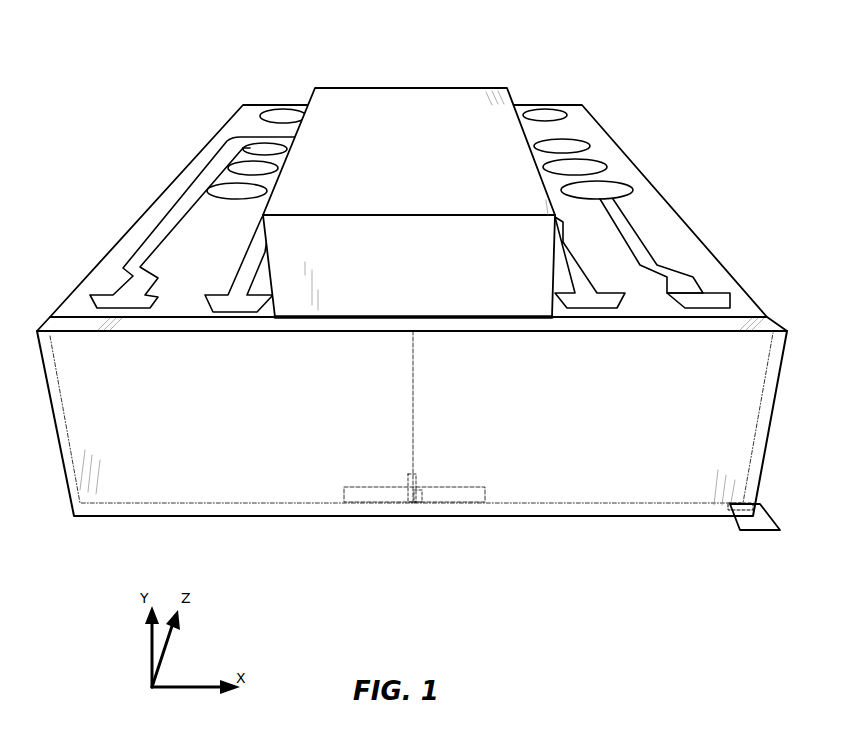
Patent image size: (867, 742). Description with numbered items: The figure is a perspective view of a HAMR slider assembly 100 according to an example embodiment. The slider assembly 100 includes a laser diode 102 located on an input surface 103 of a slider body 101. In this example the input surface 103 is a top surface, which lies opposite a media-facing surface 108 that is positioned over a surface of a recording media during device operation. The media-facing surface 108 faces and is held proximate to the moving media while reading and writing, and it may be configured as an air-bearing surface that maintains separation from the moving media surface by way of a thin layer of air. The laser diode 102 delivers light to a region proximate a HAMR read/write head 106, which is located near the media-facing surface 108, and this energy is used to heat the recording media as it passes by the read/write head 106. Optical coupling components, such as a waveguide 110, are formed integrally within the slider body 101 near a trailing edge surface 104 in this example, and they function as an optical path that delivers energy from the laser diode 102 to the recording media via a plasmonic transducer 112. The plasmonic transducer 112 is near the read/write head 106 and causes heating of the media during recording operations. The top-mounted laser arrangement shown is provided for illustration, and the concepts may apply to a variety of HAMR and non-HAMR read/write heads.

The HAMR slider assembly 100 is at (598, 48).
The slider body 101 is at (218, 132).
The laser diode 102 is at (337, 88).
The input surface 103 is at (100, 278).
The trailing edge surface 104 is at (133, 490).
The HAMR read/write head 106 is at (418, 502).
The media-facing surface 108 is at (770, 534).
The waveguide 110 is at (413, 400).
The plasmonic transducer 112 is at (410, 506).